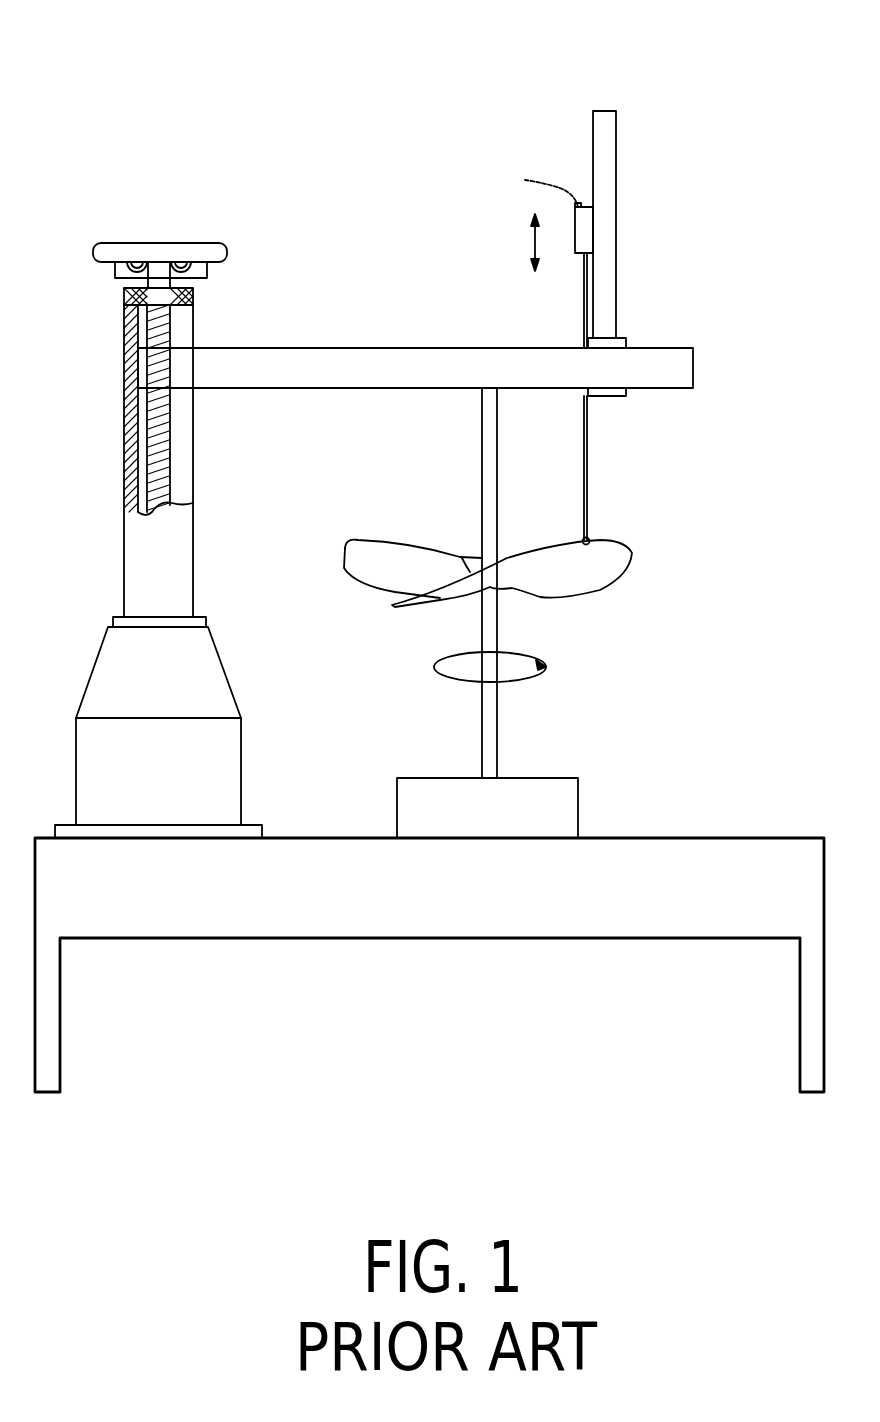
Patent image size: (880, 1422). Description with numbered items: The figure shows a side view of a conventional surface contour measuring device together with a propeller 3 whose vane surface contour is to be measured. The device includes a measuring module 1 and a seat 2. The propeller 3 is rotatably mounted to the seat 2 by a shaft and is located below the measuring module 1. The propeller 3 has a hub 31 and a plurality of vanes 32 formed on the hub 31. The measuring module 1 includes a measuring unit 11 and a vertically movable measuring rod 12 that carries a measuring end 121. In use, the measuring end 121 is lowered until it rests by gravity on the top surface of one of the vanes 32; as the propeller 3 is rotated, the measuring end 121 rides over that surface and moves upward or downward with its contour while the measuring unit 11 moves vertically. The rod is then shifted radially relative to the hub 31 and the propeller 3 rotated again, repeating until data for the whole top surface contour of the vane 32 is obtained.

The measuring module 1 is at (548, 110).
The measuring unit 11 is at (612, 168).
The wire 12 is at (587, 470).
The measuring end 121 is at (590, 539).
The seat 2 is at (490, 738).
The propeller 3 is at (449, 591).
The hub 31 is at (470, 560).
The vanes 32 is at (362, 570).